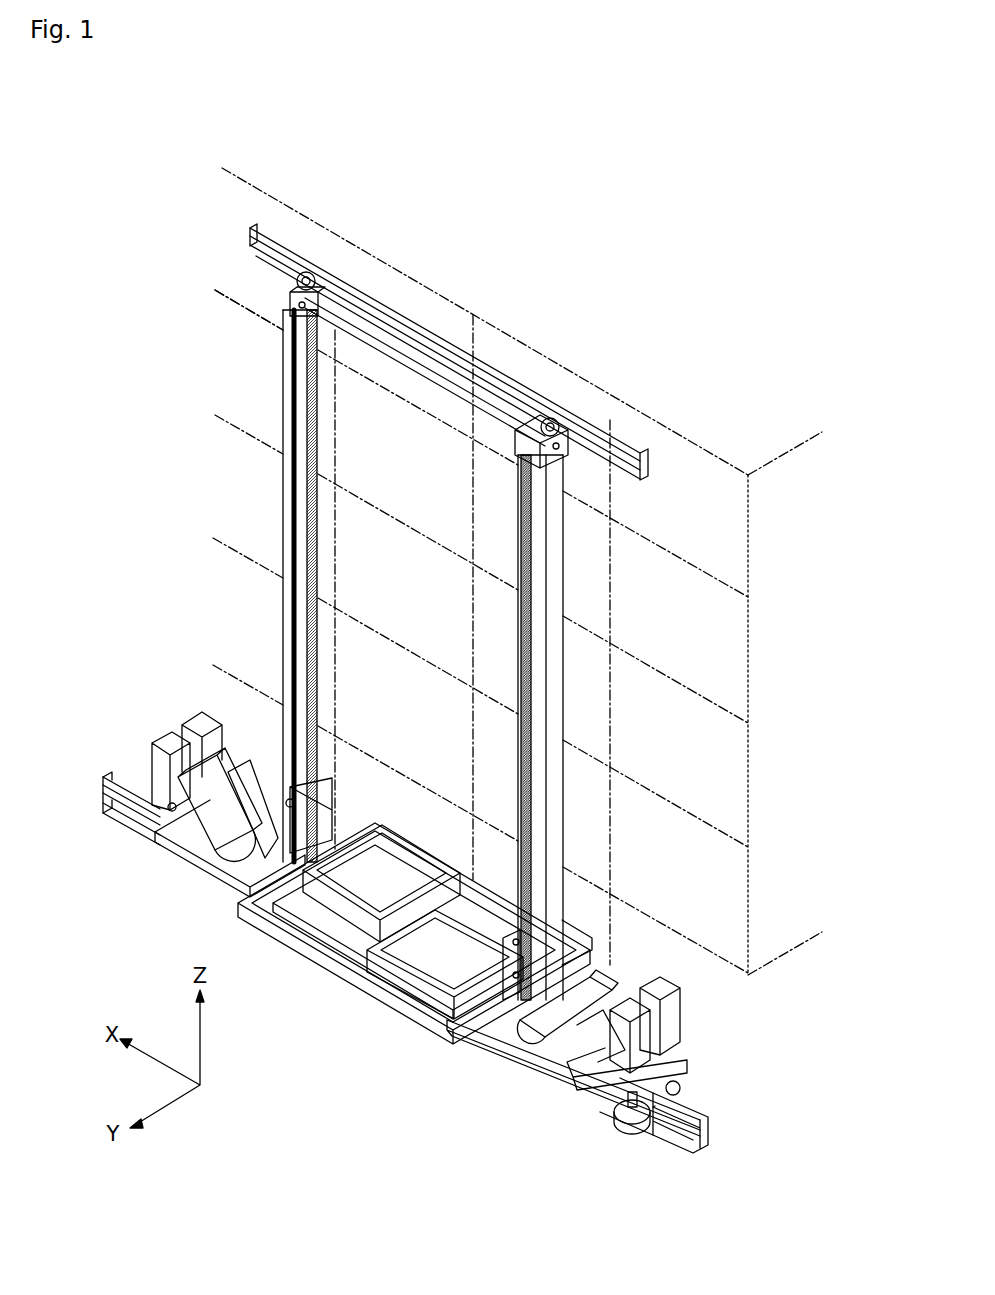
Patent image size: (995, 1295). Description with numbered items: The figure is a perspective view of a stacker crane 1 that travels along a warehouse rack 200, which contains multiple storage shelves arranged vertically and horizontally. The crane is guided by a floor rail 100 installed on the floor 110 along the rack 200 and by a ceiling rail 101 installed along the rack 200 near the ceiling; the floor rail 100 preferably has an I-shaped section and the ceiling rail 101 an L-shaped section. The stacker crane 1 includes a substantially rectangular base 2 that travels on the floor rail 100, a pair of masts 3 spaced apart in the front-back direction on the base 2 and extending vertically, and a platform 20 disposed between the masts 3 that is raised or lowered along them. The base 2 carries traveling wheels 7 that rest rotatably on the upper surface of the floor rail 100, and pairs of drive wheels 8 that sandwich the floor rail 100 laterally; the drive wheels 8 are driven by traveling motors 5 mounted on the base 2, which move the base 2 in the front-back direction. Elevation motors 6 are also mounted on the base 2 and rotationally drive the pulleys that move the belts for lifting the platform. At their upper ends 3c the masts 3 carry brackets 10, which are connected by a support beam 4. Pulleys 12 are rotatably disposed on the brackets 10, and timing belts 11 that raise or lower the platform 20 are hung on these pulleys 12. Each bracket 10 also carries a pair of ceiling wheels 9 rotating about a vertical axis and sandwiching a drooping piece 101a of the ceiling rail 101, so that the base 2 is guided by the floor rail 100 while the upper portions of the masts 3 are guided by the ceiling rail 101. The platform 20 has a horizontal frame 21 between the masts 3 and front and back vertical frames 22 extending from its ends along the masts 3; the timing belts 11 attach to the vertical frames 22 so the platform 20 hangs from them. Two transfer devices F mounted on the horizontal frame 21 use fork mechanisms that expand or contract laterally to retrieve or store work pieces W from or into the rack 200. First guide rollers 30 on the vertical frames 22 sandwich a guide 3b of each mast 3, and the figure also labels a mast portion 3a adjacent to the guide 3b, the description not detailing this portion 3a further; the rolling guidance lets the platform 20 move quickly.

The stacker crane 1 is at (245, 362).
The base 2 is at (212, 862).
The masts 3 is at (407, 655).
The column inner member 3a is at (286, 490).
The guide 3b is at (292, 513).
The upper ends 3c is at (281, 325).
The support beam 4 is at (433, 368).
The traveling motors 5 is at (197, 720).
The elevation motors 6 is at (210, 755).
The traveling wheels 7 is at (232, 773).
The drive wheels 8 is at (160, 865).
The ceiling wheels 9 is at (310, 272).
The brackets 10 is at (292, 298).
The timing belts 11 is at (313, 573).
The pulleys 12 is at (328, 357).
The platform 20 is at (414, 883).
The horizontal frame 21 is at (375, 1010).
The vertical frames 22 is at (300, 870).
The first guide rollers 30 is at (298, 800).
The floor rail 100 is at (108, 790).
The ceiling rail 101 is at (408, 312).
The drooping piece 101a is at (258, 232).
The floor 110 is at (520, 1080).
The rack 200 is at (700, 425).
The work pieces W is at (388, 828).
The transfer devices F is at (412, 845).